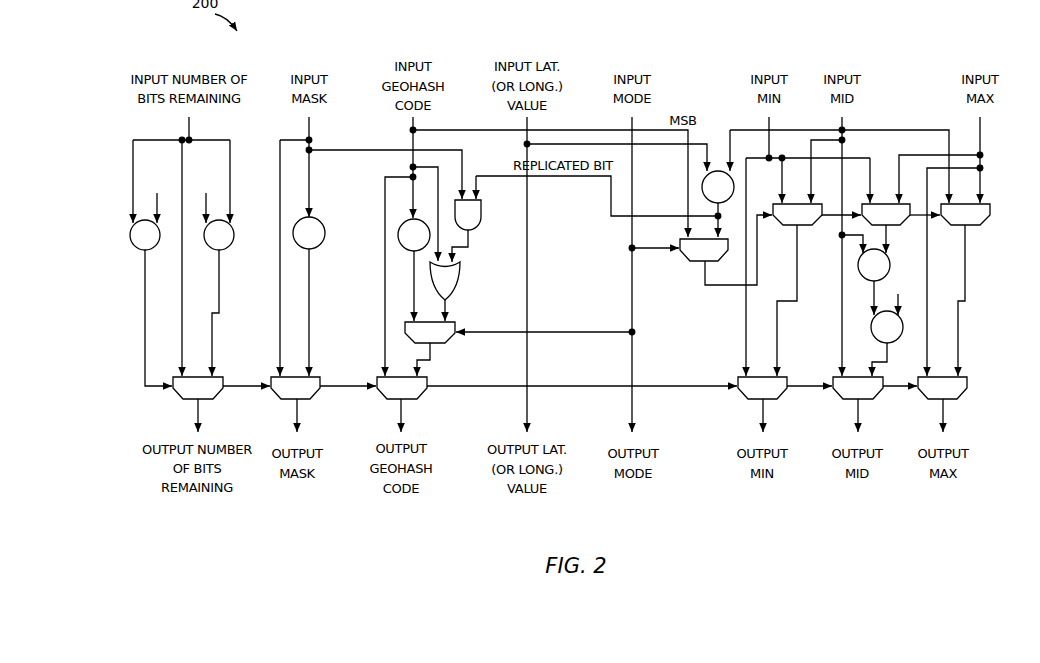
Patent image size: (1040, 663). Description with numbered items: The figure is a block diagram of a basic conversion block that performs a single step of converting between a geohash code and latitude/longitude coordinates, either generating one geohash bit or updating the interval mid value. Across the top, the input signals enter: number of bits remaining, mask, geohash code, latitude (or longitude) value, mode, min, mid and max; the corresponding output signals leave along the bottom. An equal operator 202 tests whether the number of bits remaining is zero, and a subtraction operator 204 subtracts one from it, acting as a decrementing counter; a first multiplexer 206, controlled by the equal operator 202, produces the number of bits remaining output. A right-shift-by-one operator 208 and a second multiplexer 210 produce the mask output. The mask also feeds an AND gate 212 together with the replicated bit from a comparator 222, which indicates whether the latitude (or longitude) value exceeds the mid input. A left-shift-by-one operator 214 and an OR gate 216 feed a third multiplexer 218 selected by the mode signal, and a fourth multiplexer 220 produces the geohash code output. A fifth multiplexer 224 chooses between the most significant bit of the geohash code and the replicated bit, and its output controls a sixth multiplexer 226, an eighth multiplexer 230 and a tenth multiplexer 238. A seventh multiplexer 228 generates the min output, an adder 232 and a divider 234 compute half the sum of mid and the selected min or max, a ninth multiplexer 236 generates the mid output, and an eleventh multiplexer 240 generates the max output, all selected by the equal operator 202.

The equal operator 202 is at (137, 249).
The subtraction operator 204 is at (229, 248).
The first two-input multiplexer 206 is at (221, 377).
The right-shift-by-one operator 208 is at (324, 247).
The second two-input multiplexer 210 is at (320, 377).
The AND gate 212 is at (481, 208).
The left-shift-by-one operator 214 is at (400, 229).
The OR gate 216 is at (459, 273).
The third two-input multiplexer 218 is at (456, 322).
The fourth two-input multiplexer 220 is at (427, 377).
The comparator 222 is at (703, 195).
The fifth multiplexer 224 is at (686, 262).
The sixth two-input multiplexer 226 is at (789, 227).
The seventh two-input multiplexer 228 is at (739, 377).
The eighth two-input multiplexer 230 is at (903, 227).
The adder 232 is at (858, 265).
The divider 234 is at (871, 329).
The ninth two-input multiplexer 236 is at (834, 377).
The tenth two-input multiplexer 238 is at (973, 228).
The eleventh two-input multiplexer 240 is at (966, 378).